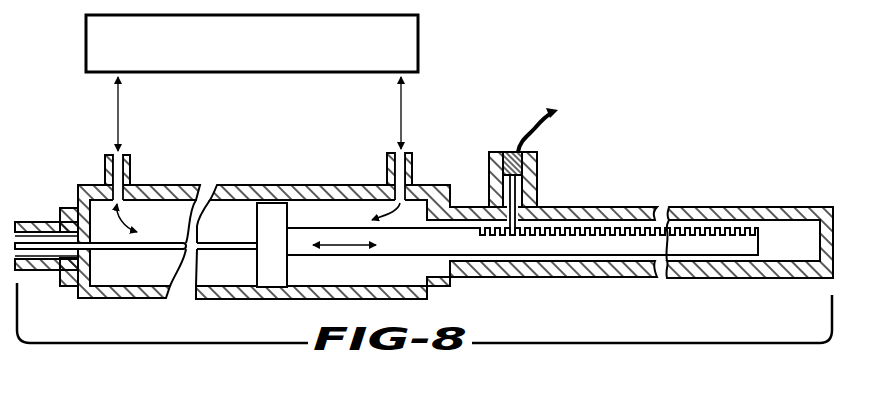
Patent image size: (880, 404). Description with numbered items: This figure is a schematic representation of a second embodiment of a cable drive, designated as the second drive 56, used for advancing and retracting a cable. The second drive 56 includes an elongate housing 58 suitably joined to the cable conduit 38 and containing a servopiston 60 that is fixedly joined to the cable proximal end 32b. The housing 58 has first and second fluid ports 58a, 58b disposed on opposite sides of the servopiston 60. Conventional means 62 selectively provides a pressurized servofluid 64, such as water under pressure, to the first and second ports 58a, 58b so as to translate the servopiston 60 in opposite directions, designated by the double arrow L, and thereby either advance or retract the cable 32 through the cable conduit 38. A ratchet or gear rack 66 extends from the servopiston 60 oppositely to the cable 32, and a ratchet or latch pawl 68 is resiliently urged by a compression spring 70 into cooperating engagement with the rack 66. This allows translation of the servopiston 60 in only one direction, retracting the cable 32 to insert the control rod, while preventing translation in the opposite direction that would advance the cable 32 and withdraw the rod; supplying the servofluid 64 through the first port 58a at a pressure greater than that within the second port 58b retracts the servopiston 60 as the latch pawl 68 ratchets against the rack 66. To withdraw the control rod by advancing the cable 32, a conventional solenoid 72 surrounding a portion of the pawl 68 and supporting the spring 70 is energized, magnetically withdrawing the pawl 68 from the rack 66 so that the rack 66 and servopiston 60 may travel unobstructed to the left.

The conventional means 62 is at (419, 44).
The second drive 56 is at (446, 164).
The first fluid port 58a is at (133, 165).
The second fluid port 58b is at (385, 160).
The elongate housing 58 is at (427, 300).
The cable conduit 38 is at (24, 222).
The cable 32 is at (44, 271).
The cable proximal end 32b is at (256, 252).
The servopiston 60 is at (285, 272).
The servofluid 64 is at (146, 215).
The gear rack 66 is at (594, 240).
The latch pawl 68 is at (538, 192).
The compression spring 70 is at (537, 172).
The solenoid 72 is at (489, 158).
The double arrow L is at (345, 247).